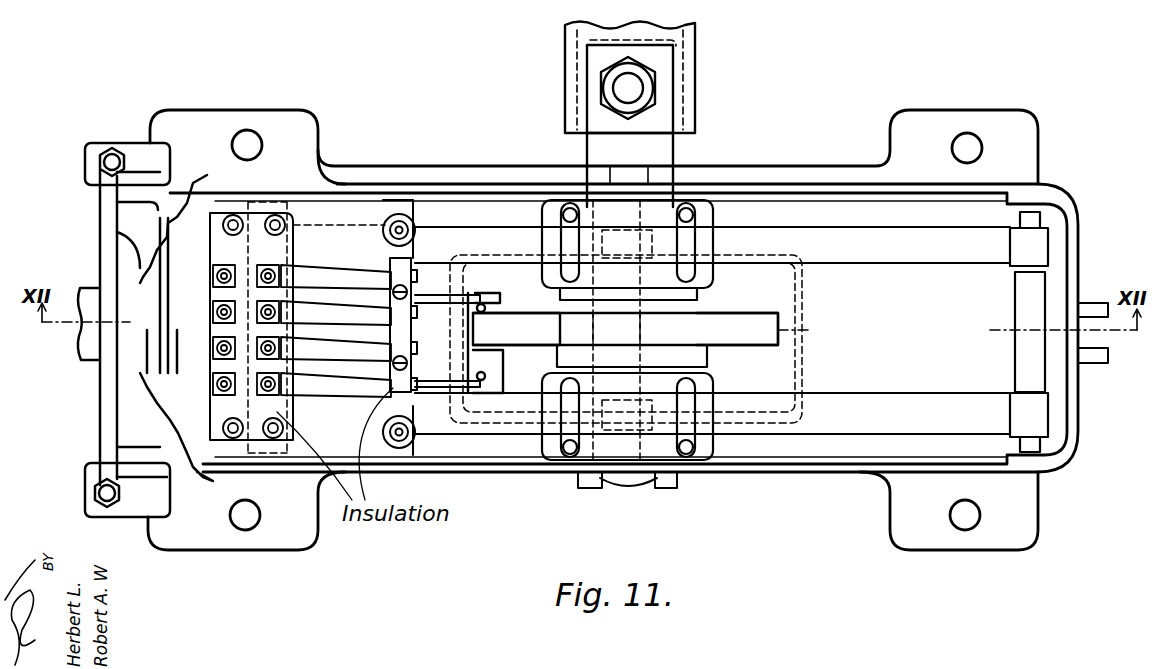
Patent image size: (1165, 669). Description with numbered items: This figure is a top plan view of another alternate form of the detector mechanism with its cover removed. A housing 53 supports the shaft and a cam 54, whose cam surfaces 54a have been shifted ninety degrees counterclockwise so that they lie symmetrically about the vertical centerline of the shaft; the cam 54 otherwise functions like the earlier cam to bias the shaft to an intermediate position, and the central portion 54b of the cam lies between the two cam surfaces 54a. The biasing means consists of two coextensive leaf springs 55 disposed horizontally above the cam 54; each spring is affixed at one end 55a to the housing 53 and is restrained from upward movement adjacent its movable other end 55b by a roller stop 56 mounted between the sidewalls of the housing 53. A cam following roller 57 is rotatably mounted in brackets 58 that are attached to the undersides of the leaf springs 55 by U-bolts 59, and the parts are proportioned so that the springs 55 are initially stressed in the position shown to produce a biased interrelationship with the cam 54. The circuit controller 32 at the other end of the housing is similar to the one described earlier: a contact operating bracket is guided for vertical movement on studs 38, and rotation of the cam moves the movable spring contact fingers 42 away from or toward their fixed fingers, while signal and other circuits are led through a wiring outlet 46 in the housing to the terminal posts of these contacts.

The circuit controller 32 is at (342, 323).
The studs 38 is at (406, 223).
The movable spring contact fingers 42 is at (286, 274).
The wiring outlet 46 is at (92, 354).
The housing 53 is at (792, 472).
The cam 54 is at (793, 332).
The cam surfaces 54a is at (512, 330).
The contact bar central portion 54b is at (656, 337).
The leaf springs 55 is at (900, 257).
The fixed end of leaf spring 55a is at (1022, 257).
The movable end of leaf spring 55b is at (219, 236).
The roller stop 56 is at (276, 223).
The cam following roller 57 is at (598, 330).
The brackets 58 is at (712, 278).
The U-bolts 59 is at (561, 240).